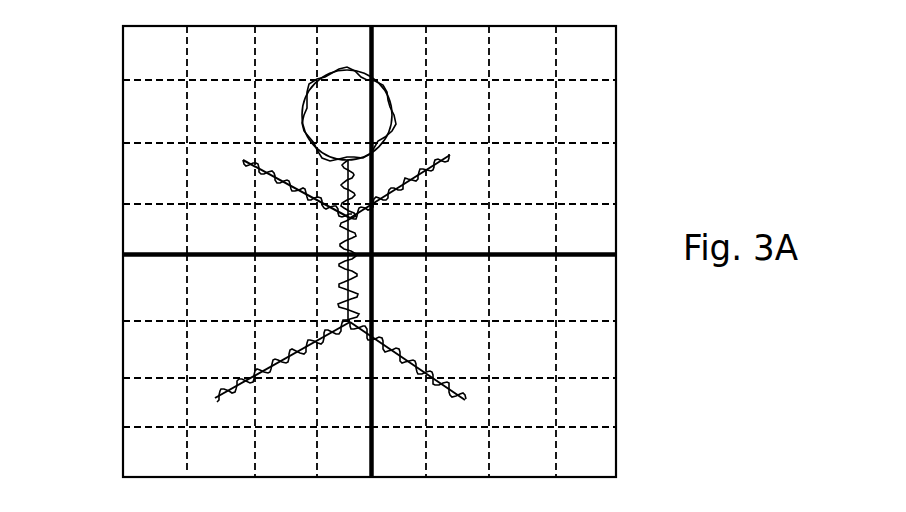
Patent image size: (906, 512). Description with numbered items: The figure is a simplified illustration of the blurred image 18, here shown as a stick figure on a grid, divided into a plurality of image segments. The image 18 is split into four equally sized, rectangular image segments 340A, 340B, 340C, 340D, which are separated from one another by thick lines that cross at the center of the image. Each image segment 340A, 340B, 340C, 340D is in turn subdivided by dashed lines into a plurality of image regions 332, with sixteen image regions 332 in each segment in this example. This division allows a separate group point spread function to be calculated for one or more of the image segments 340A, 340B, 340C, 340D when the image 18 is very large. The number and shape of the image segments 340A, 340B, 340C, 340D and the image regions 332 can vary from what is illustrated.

The blurred image 18 is at (108, 401).
The image regions 332 is at (132, 452).
The image segment 340A is at (108, 163).
The image segment 340B is at (617, 114).
The image segment 340C is at (108, 294).
The image segment 340D is at (617, 302).